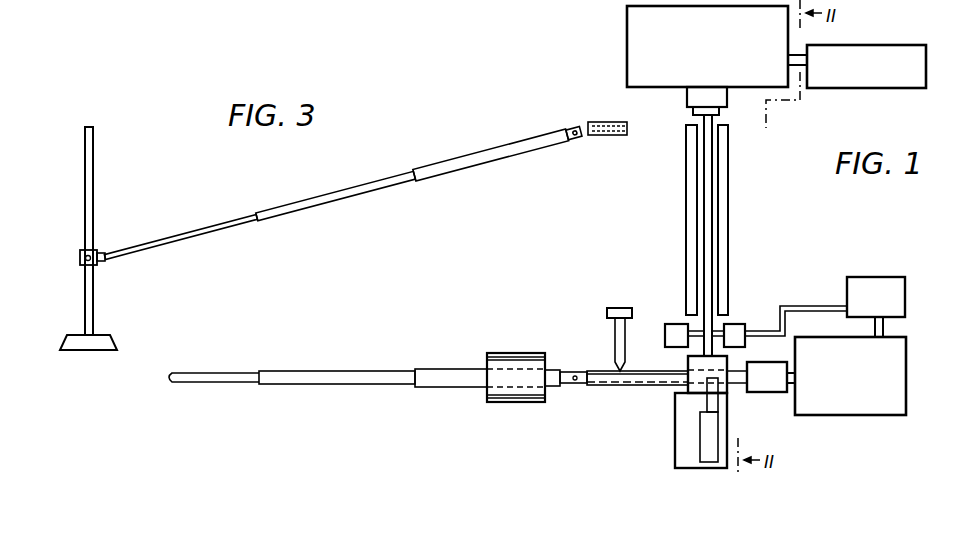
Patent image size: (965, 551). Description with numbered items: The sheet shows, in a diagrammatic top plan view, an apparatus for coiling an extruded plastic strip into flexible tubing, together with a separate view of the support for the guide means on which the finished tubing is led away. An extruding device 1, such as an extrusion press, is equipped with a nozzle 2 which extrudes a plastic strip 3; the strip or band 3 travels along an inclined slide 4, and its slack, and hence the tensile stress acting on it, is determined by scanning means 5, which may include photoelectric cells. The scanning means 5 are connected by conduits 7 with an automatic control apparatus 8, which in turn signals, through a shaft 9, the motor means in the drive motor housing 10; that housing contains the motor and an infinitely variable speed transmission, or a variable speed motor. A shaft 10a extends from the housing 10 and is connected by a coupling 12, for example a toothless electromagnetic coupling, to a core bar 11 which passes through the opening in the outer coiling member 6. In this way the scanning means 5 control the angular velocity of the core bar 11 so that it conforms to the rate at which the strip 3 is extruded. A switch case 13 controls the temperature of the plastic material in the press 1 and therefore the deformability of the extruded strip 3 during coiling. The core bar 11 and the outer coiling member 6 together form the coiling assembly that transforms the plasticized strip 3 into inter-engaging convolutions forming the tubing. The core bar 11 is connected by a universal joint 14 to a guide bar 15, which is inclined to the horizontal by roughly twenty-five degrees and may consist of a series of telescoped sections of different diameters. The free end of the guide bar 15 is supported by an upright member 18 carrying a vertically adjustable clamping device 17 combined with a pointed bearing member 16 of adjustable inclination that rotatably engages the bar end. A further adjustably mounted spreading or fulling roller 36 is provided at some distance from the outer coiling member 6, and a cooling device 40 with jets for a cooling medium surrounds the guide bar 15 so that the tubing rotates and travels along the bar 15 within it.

In FIG. 1, the extruding device 1 is at (638, 46).
In FIG. 1, the nozzle 2 is at (720, 110).
In FIG. 1, the plastic strip 3 is at (712, 250).
In FIG. 1, the inclined slide 4 is at (726, 194).
In FIG. 1, the scanning means 5 is at (673, 324).
In FIG. 1, the outer coiling member 6 is at (690, 393).
In FIG. 1, the conduits 7 is at (797, 308).
In FIG. 1, the automatic control apparatus 8 is at (888, 283).
In FIG. 1, the shaft 9 is at (883, 325).
In FIG. 1, the drive motor housing 10 is at (906, 370).
In FIG. 1, the shaft 10a is at (795, 378).
In FIG. 1, the core bar 11 is at (664, 388).
In FIG. 3, the core bar 11 is at (606, 134).
In FIG. 1, the coupling 12 is at (770, 392).
In FIG. 1, the switch case 13 is at (913, 66).
In FIG. 1, the universal joint 14 is at (569, 376).
In FIG. 3, the universal joint 14 is at (576, 128).
In FIG. 1, the guide bar 15 is at (311, 373).
In FIG. 3, the guide bar 15 is at (455, 158).
In FIG. 3, the bearing member 16 is at (102, 252).
In FIG. 3, the clamping device 17 is at (80, 258).
In FIG. 3, the upright member 18 is at (93, 183).
In FIG. 1, the spreading or fulling roller 36 is at (622, 368).
In FIG. 1, the cooling device 40 is at (514, 356).